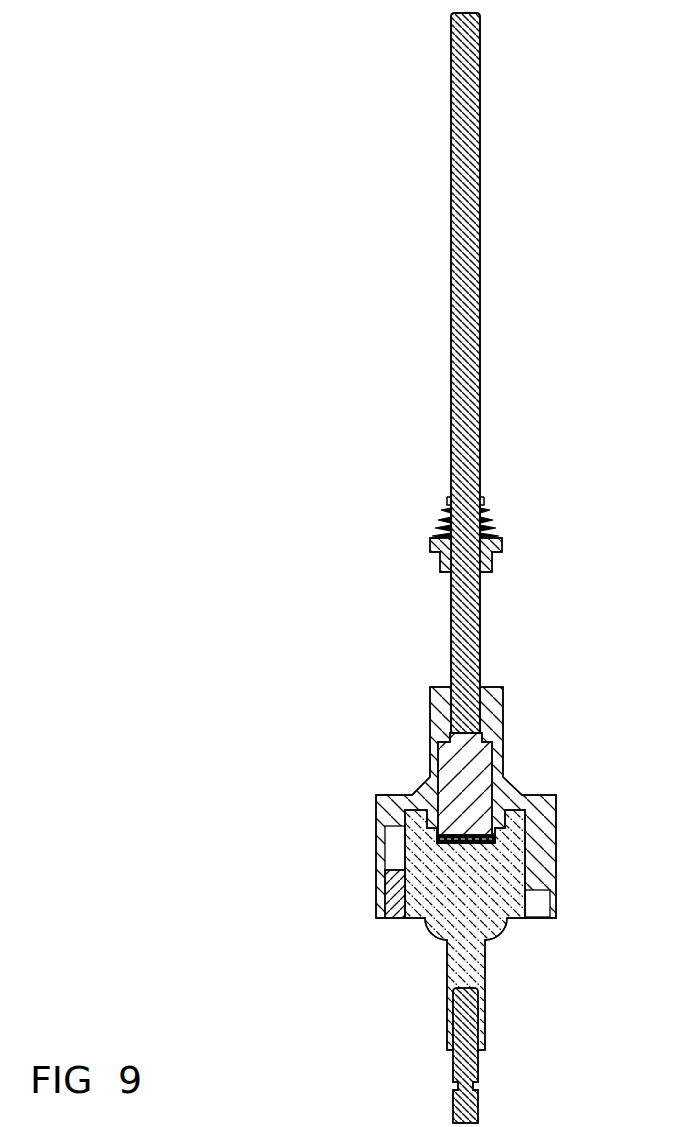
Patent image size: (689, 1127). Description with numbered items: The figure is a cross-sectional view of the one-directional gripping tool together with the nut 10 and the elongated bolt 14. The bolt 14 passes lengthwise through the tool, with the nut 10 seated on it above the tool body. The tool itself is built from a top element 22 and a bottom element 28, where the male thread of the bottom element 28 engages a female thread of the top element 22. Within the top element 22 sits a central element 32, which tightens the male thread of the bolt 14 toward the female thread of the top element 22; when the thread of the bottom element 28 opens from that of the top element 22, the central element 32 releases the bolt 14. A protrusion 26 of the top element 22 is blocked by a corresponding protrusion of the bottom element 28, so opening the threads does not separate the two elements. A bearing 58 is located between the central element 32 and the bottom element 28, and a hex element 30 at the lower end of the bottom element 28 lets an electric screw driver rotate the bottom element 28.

The nut 10 is at (428, 534).
The elongated bolt 14 is at (451, 650).
The top element 22 is at (556, 880).
The protrusion of the top element 26 is at (388, 908).
The bottom element 28 is at (505, 916).
The hex element 30 is at (455, 1098).
The central element 32 is at (492, 742).
The bearing 58 is at (412, 857).